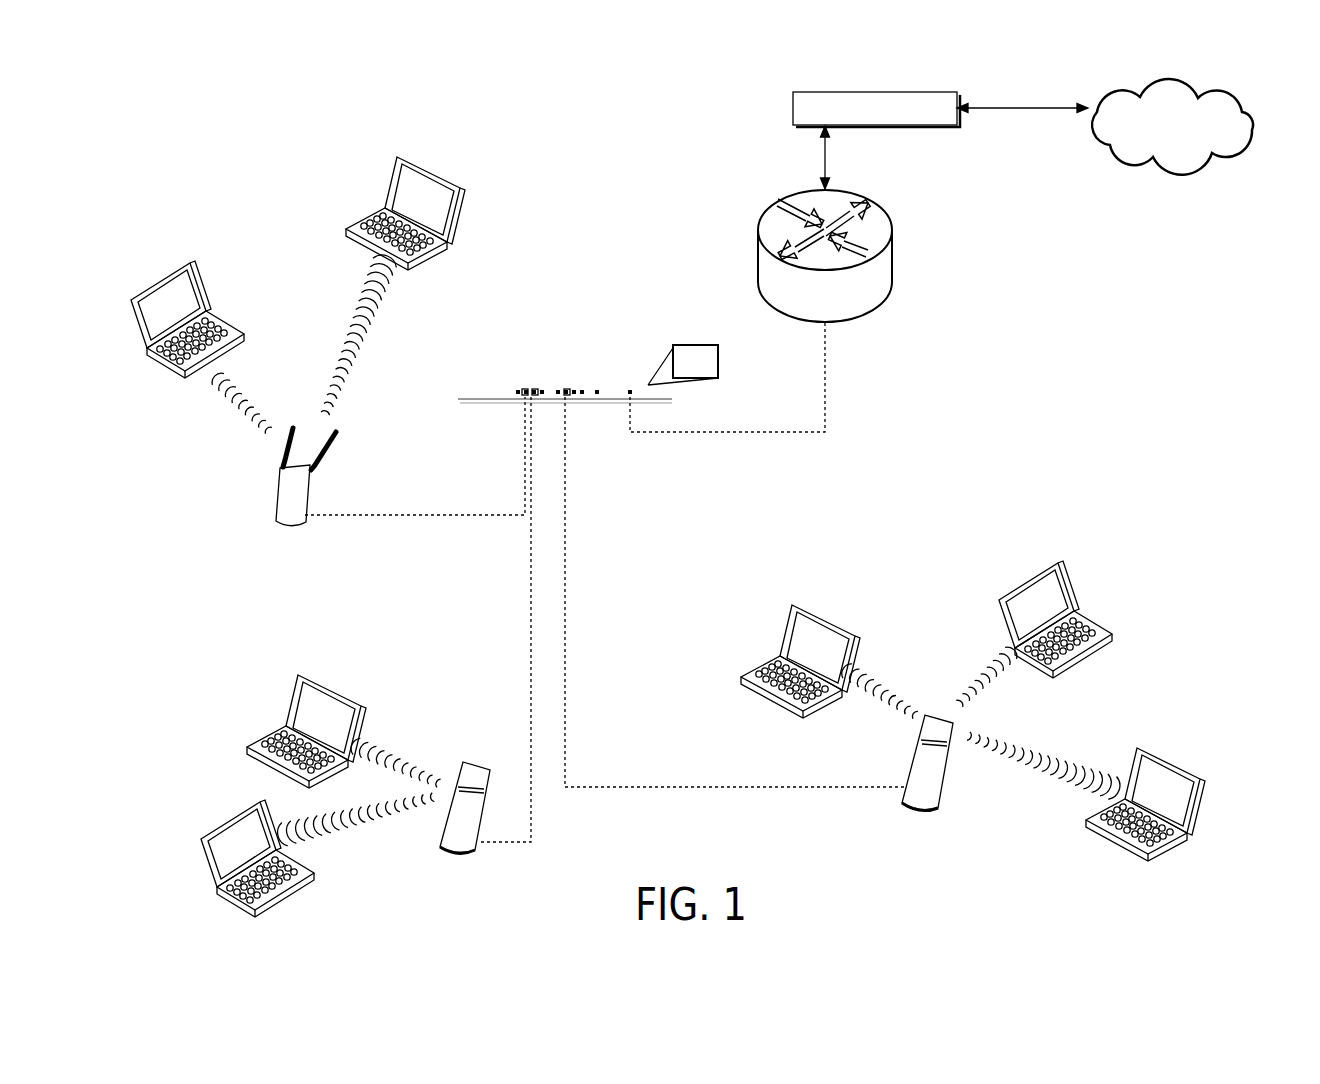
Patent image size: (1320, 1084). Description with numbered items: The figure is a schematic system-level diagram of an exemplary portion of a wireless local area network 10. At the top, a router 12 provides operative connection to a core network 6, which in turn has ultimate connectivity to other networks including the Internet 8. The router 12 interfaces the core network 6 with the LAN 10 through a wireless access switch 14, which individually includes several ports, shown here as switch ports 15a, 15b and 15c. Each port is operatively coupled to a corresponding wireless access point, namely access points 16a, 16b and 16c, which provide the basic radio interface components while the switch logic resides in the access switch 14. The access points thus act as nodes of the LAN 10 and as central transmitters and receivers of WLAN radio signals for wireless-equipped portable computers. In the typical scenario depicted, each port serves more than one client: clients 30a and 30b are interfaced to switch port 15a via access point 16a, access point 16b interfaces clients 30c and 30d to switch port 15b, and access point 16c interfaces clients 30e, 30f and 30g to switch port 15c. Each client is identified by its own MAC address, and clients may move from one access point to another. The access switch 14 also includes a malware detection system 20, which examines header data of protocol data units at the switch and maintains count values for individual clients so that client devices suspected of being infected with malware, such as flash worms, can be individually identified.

The wireless local area network 10 is at (190, 129).
The core network 6 is at (793, 111).
The Internet 8 is at (1258, 137).
The router 12 is at (759, 266).
The wireless access switch 14 is at (447, 372).
The switch port 15a is at (525, 396).
The switch port 15b is at (535, 394).
The switch port 15c is at (567, 396).
The malware detection system 20 is at (719, 362).
The access point 16a is at (275, 514).
The access point 16b is at (442, 849).
The access point 16c is at (942, 785).
The client device 30a is at (246, 344).
The client device 30b is at (452, 229).
The client device 30c is at (247, 751).
The client device 30d is at (213, 892).
The client device 30e is at (742, 680).
The client device 30f is at (1110, 645).
The client device 30g is at (1183, 832).